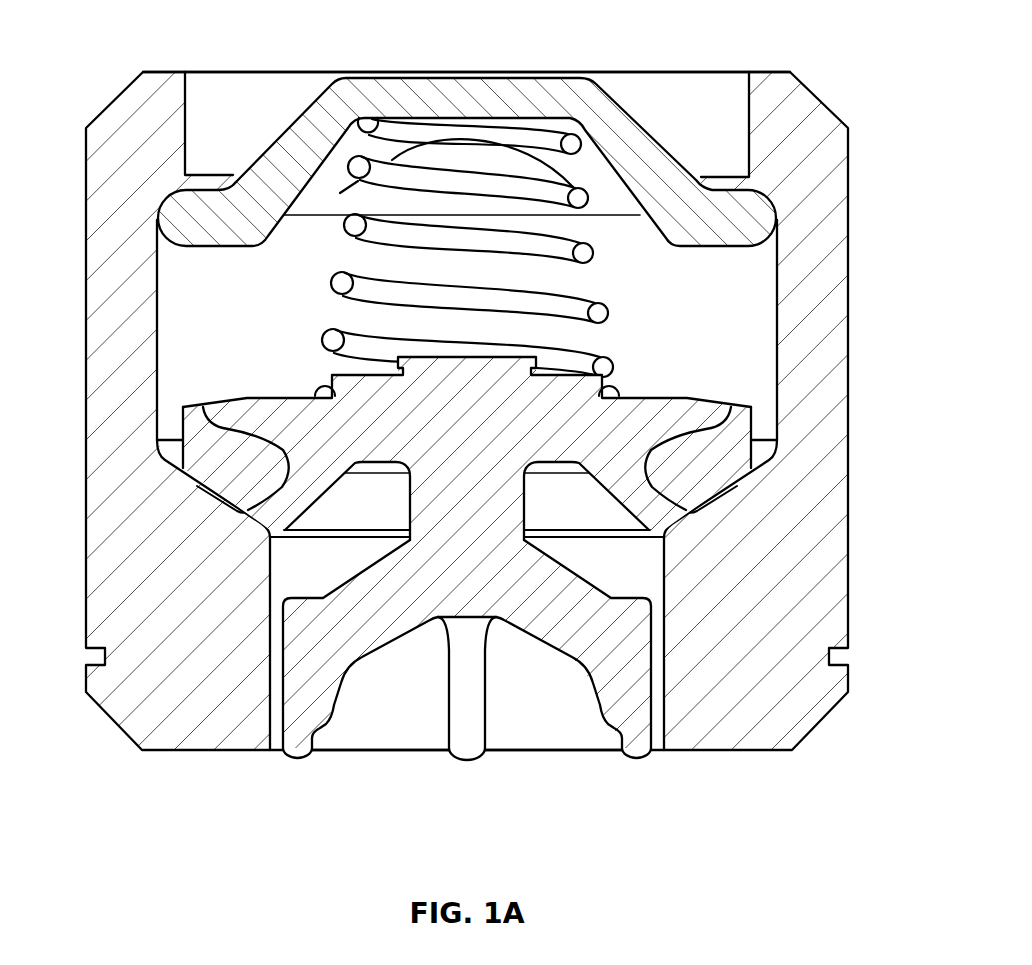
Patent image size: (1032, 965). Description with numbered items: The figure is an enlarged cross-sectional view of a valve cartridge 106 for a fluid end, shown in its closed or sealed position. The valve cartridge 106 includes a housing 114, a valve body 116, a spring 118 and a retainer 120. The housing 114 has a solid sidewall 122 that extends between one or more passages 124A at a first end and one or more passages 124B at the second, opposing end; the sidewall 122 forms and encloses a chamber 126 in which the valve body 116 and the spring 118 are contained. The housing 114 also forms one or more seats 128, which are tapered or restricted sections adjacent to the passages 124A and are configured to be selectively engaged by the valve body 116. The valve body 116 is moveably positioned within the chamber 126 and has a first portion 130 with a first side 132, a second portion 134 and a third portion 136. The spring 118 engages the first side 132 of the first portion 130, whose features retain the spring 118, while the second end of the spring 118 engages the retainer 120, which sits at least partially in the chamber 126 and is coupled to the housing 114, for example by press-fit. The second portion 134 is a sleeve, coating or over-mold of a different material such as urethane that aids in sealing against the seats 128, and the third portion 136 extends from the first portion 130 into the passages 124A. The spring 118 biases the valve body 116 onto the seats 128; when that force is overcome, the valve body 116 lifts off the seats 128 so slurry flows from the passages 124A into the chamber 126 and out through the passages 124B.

The valve cartridge 106 is at (168, 41).
The housing 114 is at (808, 540).
The valve body 116 is at (708, 395).
The spring 118 is at (605, 358).
The retainer 120 is at (500, 92).
The sidewall 122 is at (467, 411).
The passages 124A is at (569, 760).
The passages 124B is at (680, 65).
The chamber 126 is at (178, 298).
The seats 128 is at (688, 533).
The first portion 130 is at (290, 394).
The first side 132 is at (467, 382).
The second portion 134 is at (220, 463).
The third portion 136 is at (370, 613).